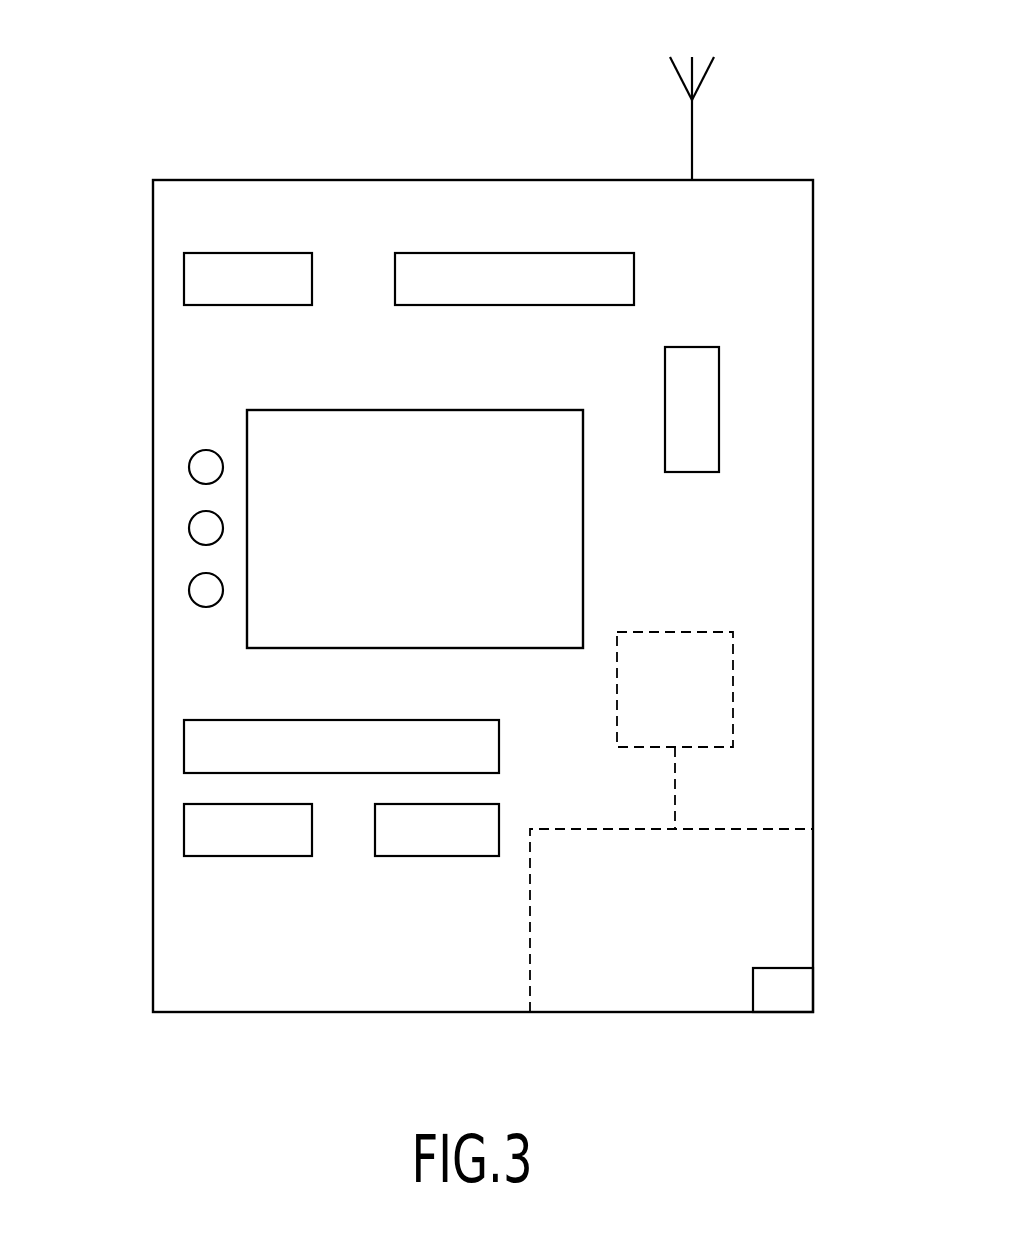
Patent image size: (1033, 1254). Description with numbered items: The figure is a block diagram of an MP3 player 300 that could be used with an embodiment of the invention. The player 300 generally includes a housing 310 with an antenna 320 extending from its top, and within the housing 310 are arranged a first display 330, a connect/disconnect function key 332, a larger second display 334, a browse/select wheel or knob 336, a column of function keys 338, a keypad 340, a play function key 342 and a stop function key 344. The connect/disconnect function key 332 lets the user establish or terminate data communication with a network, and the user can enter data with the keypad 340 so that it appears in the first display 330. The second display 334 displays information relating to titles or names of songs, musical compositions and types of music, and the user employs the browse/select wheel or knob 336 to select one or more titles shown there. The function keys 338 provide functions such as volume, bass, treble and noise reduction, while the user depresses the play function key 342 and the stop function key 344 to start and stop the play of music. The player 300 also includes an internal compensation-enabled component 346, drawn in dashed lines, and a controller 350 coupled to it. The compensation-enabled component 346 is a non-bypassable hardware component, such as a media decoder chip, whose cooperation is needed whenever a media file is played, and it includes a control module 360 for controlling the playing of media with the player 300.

The MP3 player 300 is at (489, 44).
The housing 310 is at (813, 338).
The antenna 320 is at (692, 130).
The first display 330 is at (634, 280).
The connect/disconnect function key 332 is at (184, 280).
The second display 334 is at (447, 410).
The browse/select wheel or knob 336 is at (684, 472).
The function keys 338 is at (189, 528).
The keypad 340 is at (184, 748).
The play function key 342 is at (248, 856).
The stop function key 344 is at (438, 856).
The compensation-enabled component 346 is at (530, 973).
The controller 350 is at (683, 633).
The control module 360 is at (813, 988).